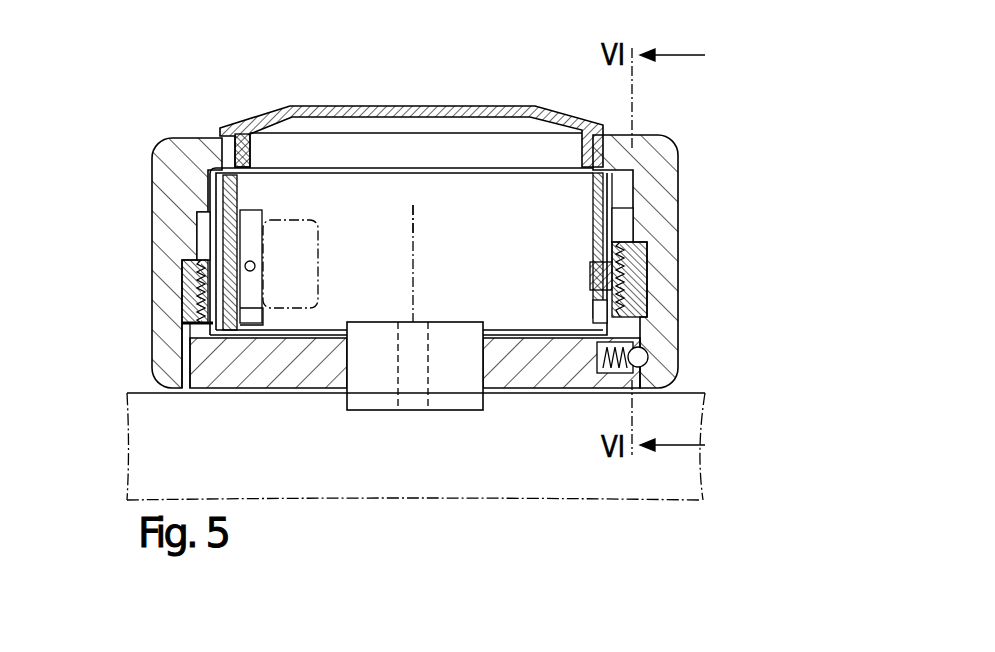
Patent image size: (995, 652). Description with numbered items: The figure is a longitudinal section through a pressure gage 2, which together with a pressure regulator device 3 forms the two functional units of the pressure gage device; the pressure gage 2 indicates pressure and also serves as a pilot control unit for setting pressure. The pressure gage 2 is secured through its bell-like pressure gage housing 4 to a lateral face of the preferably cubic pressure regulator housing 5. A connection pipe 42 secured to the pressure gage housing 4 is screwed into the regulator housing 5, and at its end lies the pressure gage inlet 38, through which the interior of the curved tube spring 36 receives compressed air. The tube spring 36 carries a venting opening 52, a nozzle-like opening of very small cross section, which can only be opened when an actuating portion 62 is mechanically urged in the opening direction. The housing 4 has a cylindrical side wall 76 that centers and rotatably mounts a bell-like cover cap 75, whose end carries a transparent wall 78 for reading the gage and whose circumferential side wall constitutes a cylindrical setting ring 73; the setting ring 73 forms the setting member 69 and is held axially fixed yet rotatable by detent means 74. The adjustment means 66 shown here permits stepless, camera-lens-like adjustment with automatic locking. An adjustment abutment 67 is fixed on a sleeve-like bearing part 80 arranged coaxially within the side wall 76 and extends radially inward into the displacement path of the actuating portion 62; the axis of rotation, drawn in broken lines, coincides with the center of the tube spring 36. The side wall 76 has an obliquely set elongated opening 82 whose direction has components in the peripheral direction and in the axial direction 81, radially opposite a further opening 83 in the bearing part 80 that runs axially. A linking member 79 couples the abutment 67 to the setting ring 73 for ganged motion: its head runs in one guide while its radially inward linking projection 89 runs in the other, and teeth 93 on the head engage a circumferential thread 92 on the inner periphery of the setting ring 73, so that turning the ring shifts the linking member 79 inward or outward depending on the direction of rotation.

The pressure gage 2 is at (702, 240).
The pressure regulator device 3 is at (718, 470).
The pressure gage housing 4 is at (212, 356).
The pressure regulator housing 5 is at (140, 423).
The tube spring 36 is at (318, 235).
The pressure gage inlet 38 is at (410, 410).
The connection pipe 42 is at (468, 400).
The venting opening 52 is at (263, 272).
The actuating portion 62 is at (270, 322).
The adjustment means 66 is at (692, 145).
The adjustment abutment 67 is at (260, 208).
The setting member 69 is at (167, 258).
The setting ring 73 is at (122, 314).
The detent means 74 is at (652, 352).
The cover cap 75 is at (190, 150).
The side wall 76 is at (215, 222).
The transparent wall 78 is at (406, 107).
The linking member 79 is at (610, 253).
The bearing part 80 is at (250, 168).
The axial direction 81 is at (418, 218).
The elongated opening 82 is at (633, 223).
The further opening 83 is at (595, 225).
The linking projection 89 is at (590, 266).
The thread 92 is at (597, 313).
The teeth 93 is at (660, 283).